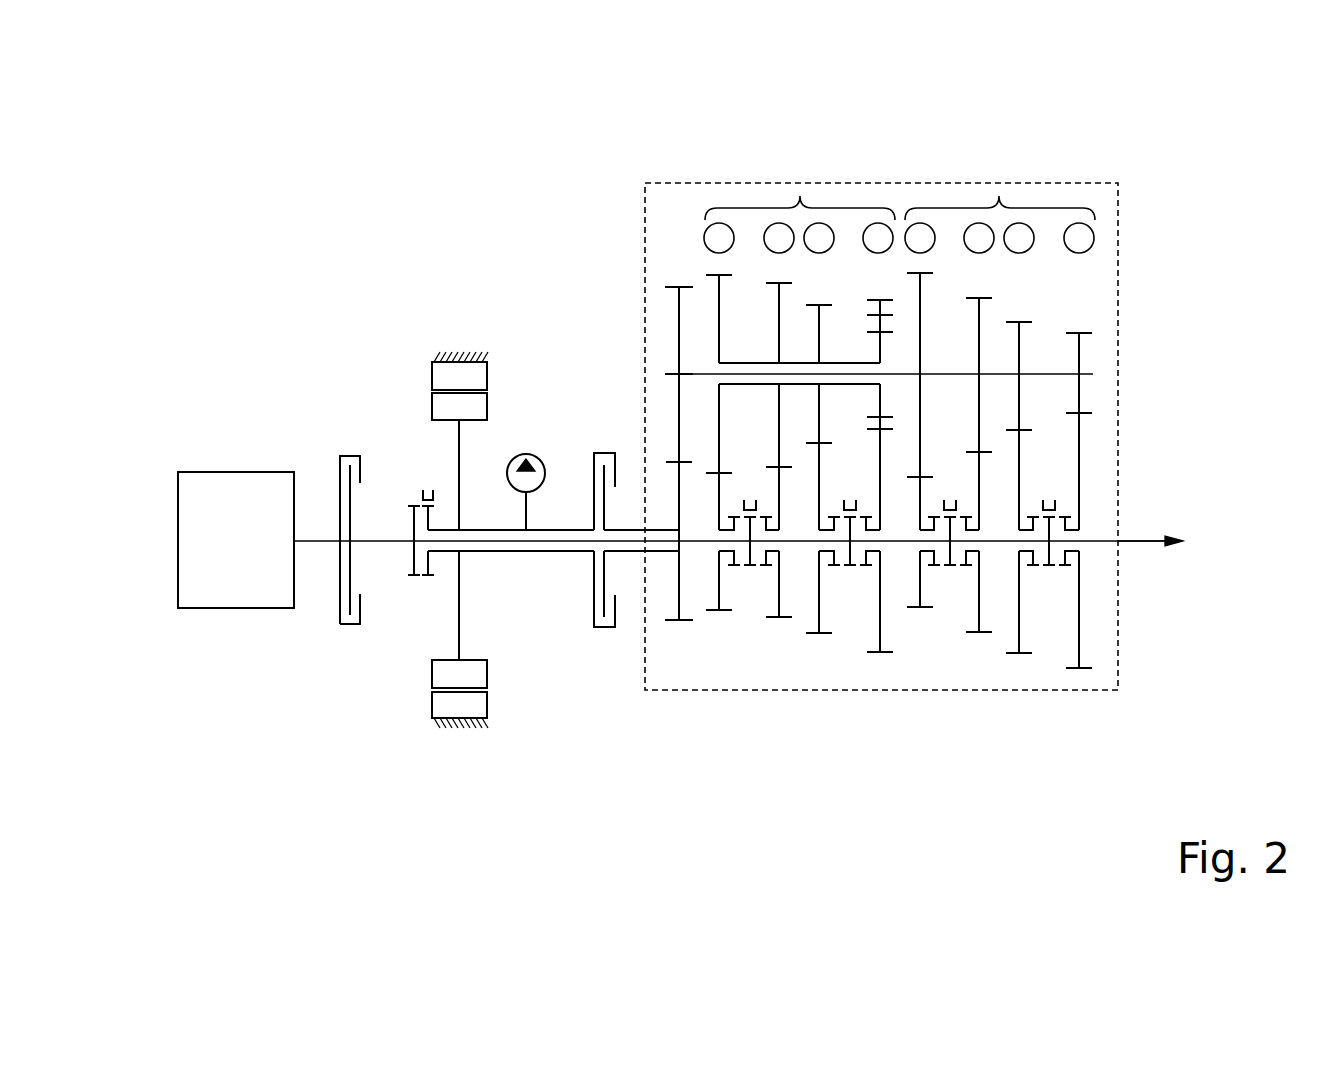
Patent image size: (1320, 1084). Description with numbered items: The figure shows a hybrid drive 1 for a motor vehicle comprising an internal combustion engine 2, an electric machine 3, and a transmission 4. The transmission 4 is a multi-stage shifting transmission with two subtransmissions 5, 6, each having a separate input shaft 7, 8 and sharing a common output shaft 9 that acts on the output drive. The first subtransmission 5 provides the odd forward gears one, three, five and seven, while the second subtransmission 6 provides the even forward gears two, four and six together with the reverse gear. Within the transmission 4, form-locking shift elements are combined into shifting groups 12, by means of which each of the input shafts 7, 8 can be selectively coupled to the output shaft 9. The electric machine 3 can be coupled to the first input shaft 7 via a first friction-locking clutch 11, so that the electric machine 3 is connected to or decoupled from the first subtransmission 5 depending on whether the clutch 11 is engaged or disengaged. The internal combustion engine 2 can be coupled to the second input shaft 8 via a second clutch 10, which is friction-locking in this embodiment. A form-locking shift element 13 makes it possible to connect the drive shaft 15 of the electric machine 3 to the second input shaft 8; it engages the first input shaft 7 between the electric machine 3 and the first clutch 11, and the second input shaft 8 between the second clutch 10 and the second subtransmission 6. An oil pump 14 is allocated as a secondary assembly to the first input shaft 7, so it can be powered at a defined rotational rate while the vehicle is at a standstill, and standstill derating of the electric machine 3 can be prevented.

The hybrid drive 1 is at (178, 225).
The internal combustion engine 2 is at (229, 593).
The electric machine 3 is at (435, 340).
The transmission 4 is at (1119, 249).
The first subtransmission 5 is at (999, 197).
The second subtransmission 6 is at (800, 197).
The first input shaft 7 is at (632, 551).
The second input shaft 8 is at (553, 541).
The output shaft 9 is at (1138, 541).
The second clutch 10 is at (343, 632).
The first friction-locking clutch 11 is at (598, 447).
The shifting groups 12 is at (751, 586).
The form-locking shift element 13 is at (410, 452).
The oil pump 14 is at (518, 447).
The drive shaft 15 is at (500, 551).